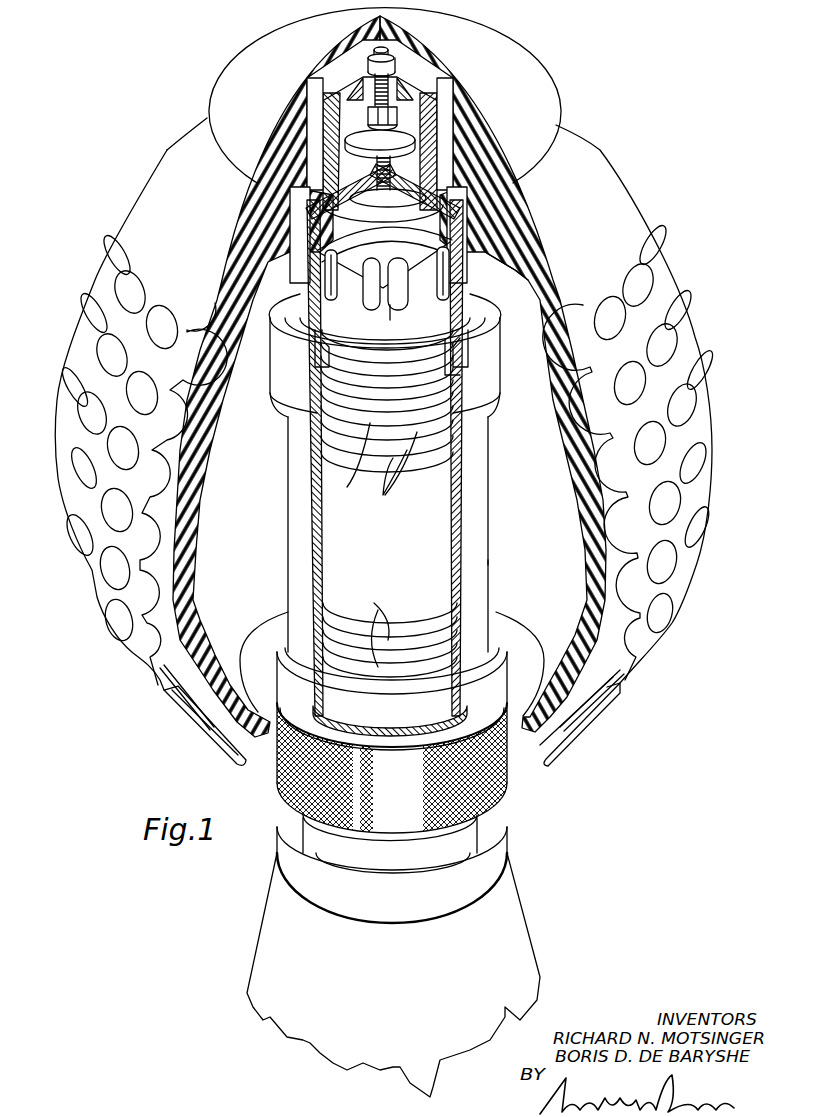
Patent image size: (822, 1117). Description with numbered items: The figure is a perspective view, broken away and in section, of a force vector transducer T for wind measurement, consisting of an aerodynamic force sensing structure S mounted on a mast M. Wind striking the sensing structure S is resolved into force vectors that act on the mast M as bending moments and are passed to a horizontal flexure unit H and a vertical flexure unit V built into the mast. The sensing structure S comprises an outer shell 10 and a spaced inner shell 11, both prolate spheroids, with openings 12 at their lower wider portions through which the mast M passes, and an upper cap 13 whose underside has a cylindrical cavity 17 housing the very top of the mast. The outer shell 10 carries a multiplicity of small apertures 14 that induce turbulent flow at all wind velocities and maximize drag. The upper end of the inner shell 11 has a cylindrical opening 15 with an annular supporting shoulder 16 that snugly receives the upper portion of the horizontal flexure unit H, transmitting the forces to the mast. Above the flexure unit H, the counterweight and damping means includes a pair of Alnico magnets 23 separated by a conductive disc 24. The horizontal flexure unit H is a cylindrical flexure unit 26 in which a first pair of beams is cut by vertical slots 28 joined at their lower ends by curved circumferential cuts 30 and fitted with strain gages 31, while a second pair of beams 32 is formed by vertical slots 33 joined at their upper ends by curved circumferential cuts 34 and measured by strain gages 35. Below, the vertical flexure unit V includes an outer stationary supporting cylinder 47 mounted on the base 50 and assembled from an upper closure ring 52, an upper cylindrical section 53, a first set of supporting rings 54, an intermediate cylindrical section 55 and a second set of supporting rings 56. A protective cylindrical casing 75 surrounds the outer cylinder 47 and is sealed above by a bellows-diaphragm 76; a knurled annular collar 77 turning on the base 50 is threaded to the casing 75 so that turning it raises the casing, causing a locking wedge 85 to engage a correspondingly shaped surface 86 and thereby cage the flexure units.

The outer shell 10 is at (127, 214).
The inner shell 11 is at (211, 437).
The openings 12 is at (255, 634).
The cap 13 is at (277, 30).
The apertures 14 is at (127, 247).
The cylindrical opening 15 is at (490, 236).
The annular supporting shoulder 16 is at (470, 184).
The cylindrical cavity 17 is at (458, 131).
The Alnico magnets 23 is at (414, 140).
The disc 24 is at (345, 133).
The cylindrical flexure unit 26 is at (323, 197).
The vertical slots 28 is at (336, 245).
The curved circumferential cuts 30 is at (379, 324).
The strain gages 31 is at (327, 275).
The second pair of beams 32 is at (390, 320).
The vertical slot 33 is at (371, 256).
The curved circumferential cuts 34 is at (437, 240).
The strain gages 35 is at (394, 280).
The outer stationary supporting cylinder 47 is at (437, 552).
The base 50 is at (480, 826).
The upper closure ring 52 is at (430, 403).
The upper cylindrical section 53 is at (347, 487).
The first set of supporting rings 54 is at (384, 493).
The intermediate cylindrical section 55 is at (366, 546).
The second set of supporting rings 56 is at (375, 605).
The protective cylindrical casing 75 is at (288, 503).
The bellows-diaphragm 76 is at (318, 362).
The annular collar 77 is at (507, 782).
The locking wedge 85 is at (472, 357).
The correspondingly shaped surface 86 is at (470, 338).
The force vector transducer T is at (553, 80).
The aerodynamic force sensing structure S is at (713, 388).
The horizontal flexure unit H is at (329, 305).
The vertical flexure unit V is at (418, 518).
The mast M is at (478, 568).